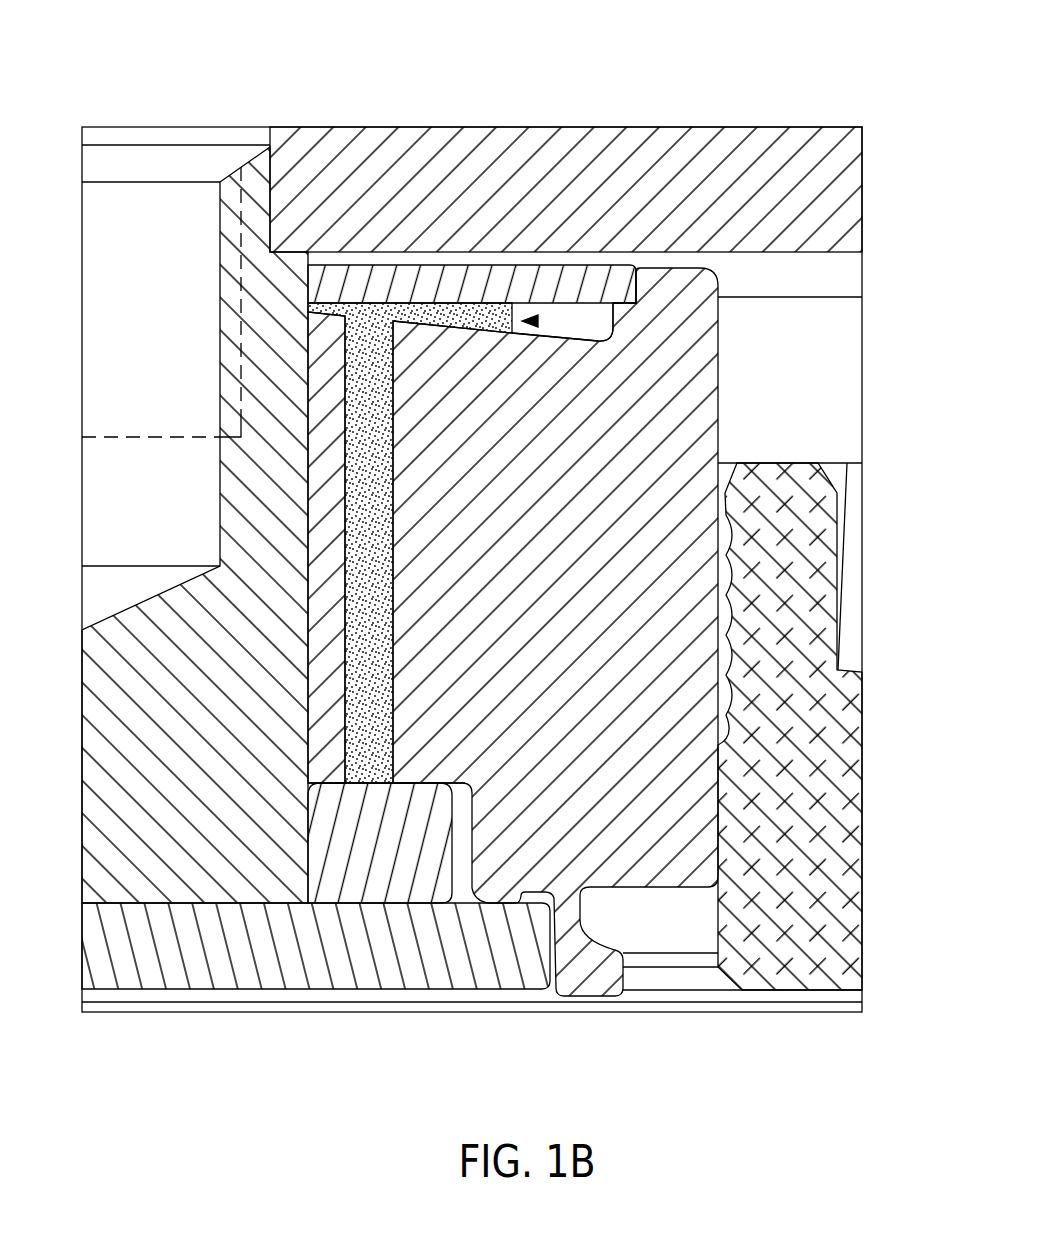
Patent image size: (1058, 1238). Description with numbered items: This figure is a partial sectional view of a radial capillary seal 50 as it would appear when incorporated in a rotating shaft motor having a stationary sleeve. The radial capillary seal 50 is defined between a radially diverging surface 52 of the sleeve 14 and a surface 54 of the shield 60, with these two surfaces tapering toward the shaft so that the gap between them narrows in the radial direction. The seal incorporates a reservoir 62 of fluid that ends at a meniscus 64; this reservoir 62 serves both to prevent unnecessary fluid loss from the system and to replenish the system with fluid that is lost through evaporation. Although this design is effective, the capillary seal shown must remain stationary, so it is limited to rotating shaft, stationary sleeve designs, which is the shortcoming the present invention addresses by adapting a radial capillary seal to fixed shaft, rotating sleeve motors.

The sleeve 14 is at (570, 793).
The radial capillary seal 50 is at (524, 321).
The radially diverging surface 52 is at (473, 332).
The surface 54 is at (563, 300).
The shield 60 is at (613, 283).
The reservoir 62 is at (418, 320).
The meniscus 64 is at (513, 332).